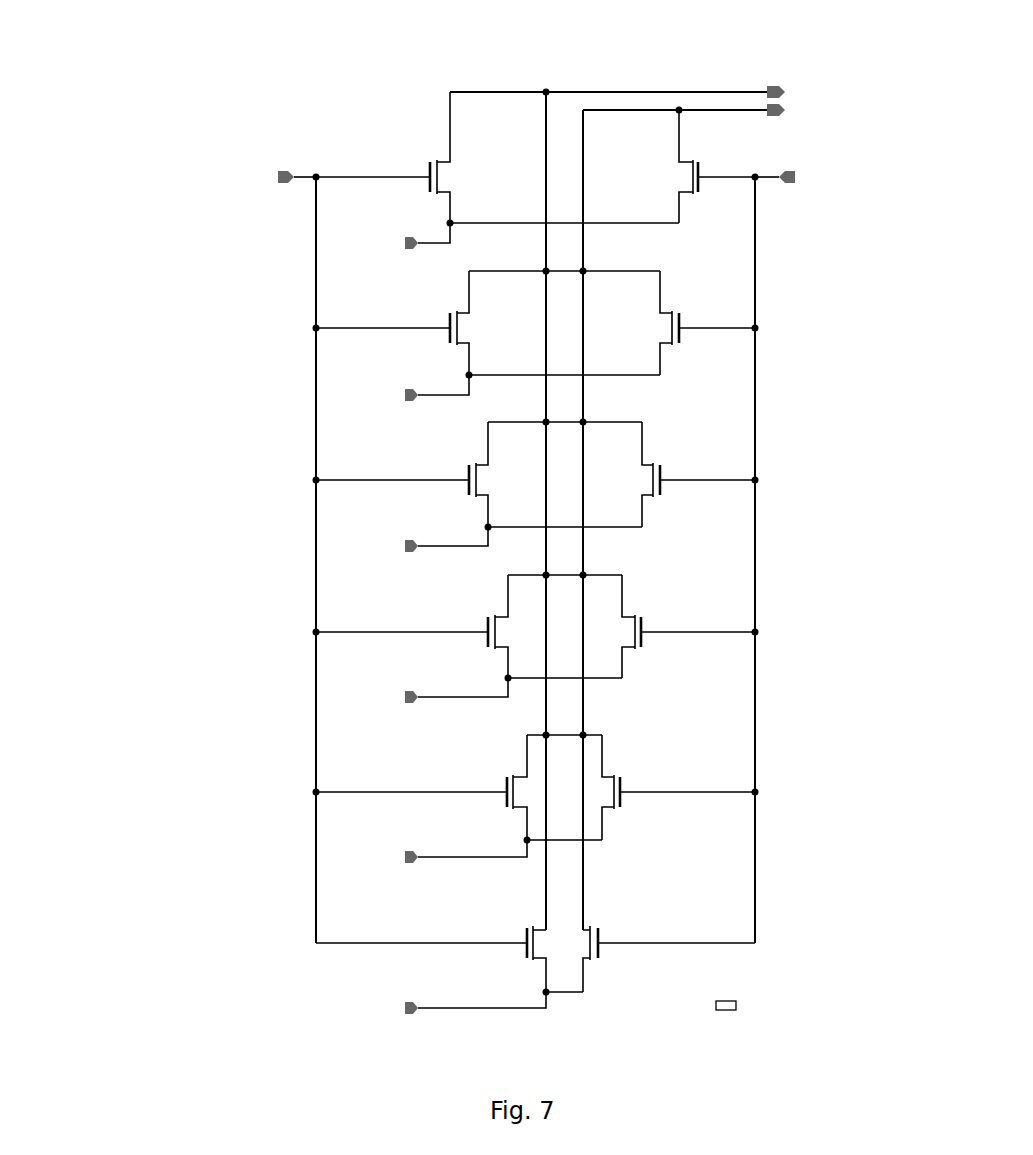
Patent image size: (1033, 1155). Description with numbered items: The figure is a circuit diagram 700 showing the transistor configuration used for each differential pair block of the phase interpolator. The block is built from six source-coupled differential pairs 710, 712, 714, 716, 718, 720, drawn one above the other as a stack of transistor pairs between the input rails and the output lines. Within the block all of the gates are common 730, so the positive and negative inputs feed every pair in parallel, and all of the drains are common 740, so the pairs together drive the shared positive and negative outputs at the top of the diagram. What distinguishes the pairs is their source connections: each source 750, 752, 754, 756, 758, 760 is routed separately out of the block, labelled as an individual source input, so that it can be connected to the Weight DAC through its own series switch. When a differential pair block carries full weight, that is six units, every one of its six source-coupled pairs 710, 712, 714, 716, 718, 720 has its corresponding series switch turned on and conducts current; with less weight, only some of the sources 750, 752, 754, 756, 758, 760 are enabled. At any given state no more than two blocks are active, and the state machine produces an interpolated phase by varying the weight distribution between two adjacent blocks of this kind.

The circuit diagram 700 is at (164, 95).
The source-coupled differential pair 710 is at (612, 225).
The source-coupled differential pair 712 is at (615, 377).
The source-coupled differential pair 714 is at (617, 530).
The source-coupled differential pair 716 is at (617, 698).
The source-coupled differential pair 718 is at (616, 840).
The source-coupled differential pair 720 is at (565, 1000).
The common gates 730 is at (295, 192).
The common drains 740 is at (868, 172).
The source 750 is at (331, 272).
The source 752 is at (332, 417).
The source 754 is at (332, 565).
The source 756 is at (347, 702).
The source 758 is at (338, 887).
The source 760 is at (325, 1035).